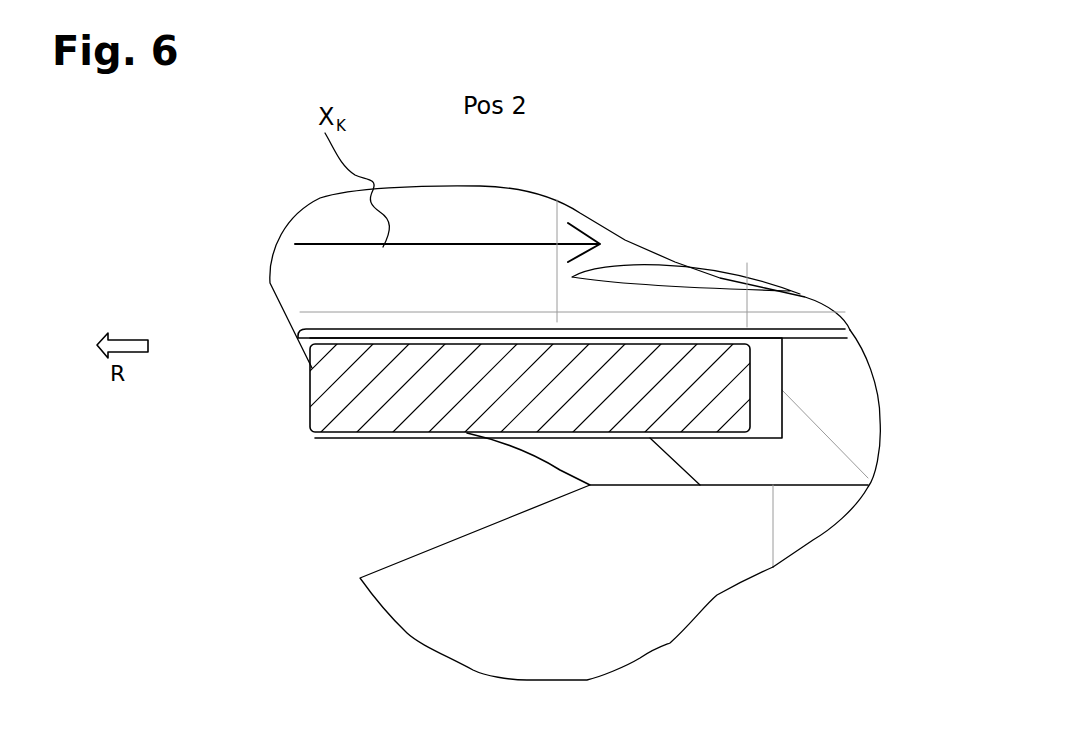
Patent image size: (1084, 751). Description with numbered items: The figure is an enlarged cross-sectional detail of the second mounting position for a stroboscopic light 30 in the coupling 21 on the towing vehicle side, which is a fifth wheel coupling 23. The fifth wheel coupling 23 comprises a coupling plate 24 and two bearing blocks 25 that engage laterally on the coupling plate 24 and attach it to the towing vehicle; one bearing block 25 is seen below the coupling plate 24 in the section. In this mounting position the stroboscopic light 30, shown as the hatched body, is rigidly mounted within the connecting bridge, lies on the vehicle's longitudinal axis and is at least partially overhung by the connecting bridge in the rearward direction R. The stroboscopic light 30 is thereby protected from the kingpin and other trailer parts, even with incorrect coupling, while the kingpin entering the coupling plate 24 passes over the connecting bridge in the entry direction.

The coupling 21 is at (475, 347).
The fifth wheel coupling 23 is at (218, 232).
The coupling plate 24 is at (865, 417).
The bearing block 25 is at (423, 588).
The stroboscopic light 30 is at (320, 417).